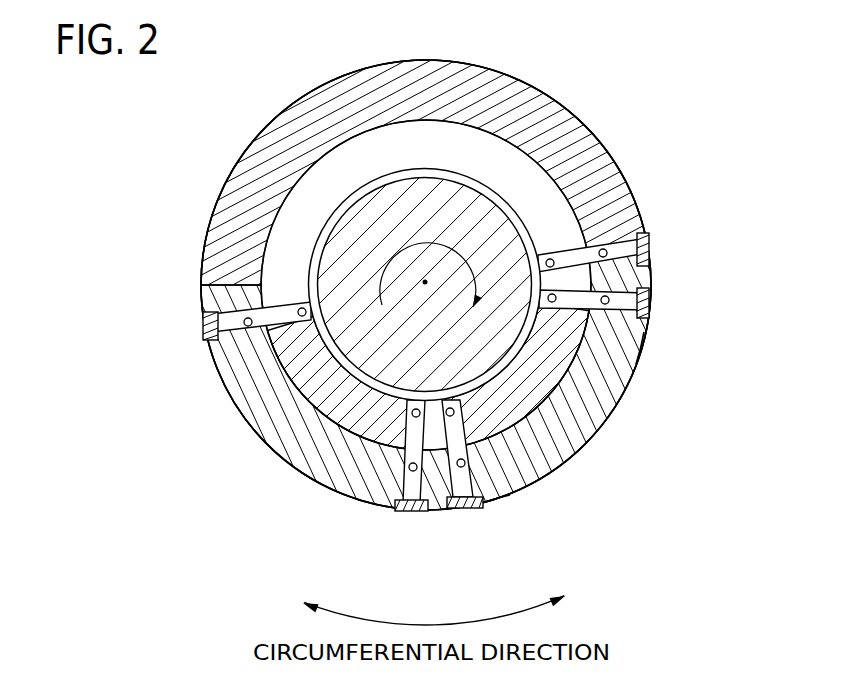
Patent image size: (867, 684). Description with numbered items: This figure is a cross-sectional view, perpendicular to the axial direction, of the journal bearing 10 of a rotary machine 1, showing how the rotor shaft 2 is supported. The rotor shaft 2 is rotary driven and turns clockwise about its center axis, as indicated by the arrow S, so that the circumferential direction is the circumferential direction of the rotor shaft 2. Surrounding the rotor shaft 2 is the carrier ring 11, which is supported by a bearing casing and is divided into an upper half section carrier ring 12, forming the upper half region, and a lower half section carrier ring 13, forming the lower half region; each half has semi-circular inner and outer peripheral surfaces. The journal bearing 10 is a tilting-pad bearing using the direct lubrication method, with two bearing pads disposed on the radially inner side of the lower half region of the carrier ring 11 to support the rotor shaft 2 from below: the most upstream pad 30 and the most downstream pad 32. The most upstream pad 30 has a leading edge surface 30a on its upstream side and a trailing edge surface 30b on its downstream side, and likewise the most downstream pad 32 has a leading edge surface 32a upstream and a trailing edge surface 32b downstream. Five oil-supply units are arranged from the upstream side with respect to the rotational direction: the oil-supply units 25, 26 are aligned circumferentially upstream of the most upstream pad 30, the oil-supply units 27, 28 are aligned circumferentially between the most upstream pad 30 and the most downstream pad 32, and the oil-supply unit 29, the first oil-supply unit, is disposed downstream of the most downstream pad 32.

The rotary machine 1 is at (759, 55).
The rotor shaft 2 is at (413, 213).
The journal bearing 10 is at (588, 98).
The carrier ring 11 is at (426, 285).
The upper half section carrier ring 12 is at (243, 173).
The lower half section carrier ring 13 is at (260, 425).
The oil-supply unit 25 is at (650, 247).
The oil-supply unit 26 is at (650, 303).
The oil-supply unit 27 is at (466, 511).
The oil-supply unit 28 is at (410, 512).
The oil-supply unit 29 is at (204, 333).
The most upstream pad 30 is at (563, 463).
The leading edge surface 30a is at (650, 338).
The trailing edge surface 30b is at (487, 480).
The most downstream pad 32 is at (337, 412).
The leading edge surface 32a is at (407, 480).
The trailing edge surface 32b is at (260, 328).